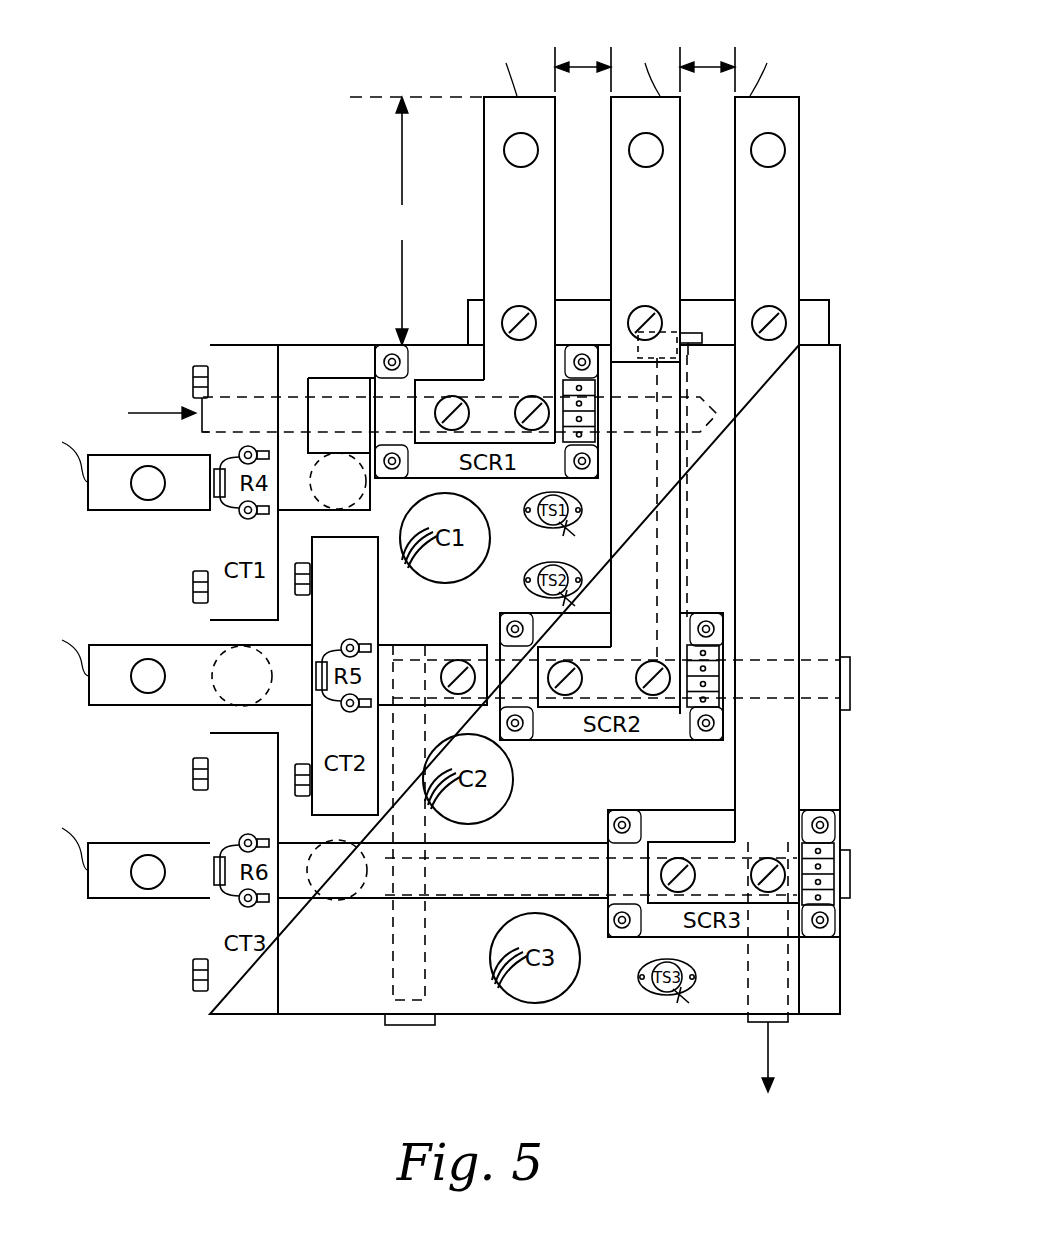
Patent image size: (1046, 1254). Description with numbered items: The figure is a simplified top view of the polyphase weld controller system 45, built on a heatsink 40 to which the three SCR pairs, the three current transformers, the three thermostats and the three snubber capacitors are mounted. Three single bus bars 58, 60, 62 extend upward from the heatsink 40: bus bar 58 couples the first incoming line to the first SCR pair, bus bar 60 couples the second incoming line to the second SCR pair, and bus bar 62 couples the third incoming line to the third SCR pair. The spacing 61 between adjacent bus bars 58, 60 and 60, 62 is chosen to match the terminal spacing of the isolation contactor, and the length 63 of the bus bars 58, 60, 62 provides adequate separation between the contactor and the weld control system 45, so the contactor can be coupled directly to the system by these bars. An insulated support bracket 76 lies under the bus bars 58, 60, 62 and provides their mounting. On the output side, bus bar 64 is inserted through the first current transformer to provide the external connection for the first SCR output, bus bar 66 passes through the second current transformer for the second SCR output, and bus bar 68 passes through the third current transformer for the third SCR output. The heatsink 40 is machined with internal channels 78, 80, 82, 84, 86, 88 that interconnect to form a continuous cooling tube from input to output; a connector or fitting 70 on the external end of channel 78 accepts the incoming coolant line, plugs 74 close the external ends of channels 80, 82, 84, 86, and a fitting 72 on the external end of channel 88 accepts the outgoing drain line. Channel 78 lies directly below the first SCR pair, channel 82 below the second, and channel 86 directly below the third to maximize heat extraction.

The heatsink 40 is at (843, 443).
The polyphase weld controller system 45 is at (128, 1071).
The bus bar 58 is at (484, 206).
The bus bar 60 is at (680, 222).
The spacing between line terminal bars 61 is at (590, 62).
The bus bar 62 is at (799, 218).
The length of the bus bars 63 is at (417, 221).
The bus bar 64 is at (122, 511).
The bus bar 66 is at (123, 706).
The bus bar 68 is at (123, 899).
The connector or fitting 70 is at (196, 412).
The connector or fitting 72 is at (773, 1022).
The plugs 74 is at (690, 335).
The insulated support bracket 76 is at (812, 305).
The internal channel 78 is at (290, 410).
The internal channel 80 is at (812, 394).
The internal channel 82 is at (820, 681).
The internal channel 84 is at (407, 963).
The internal channel 86 is at (505, 868).
The internal channel 88 is at (780, 953).